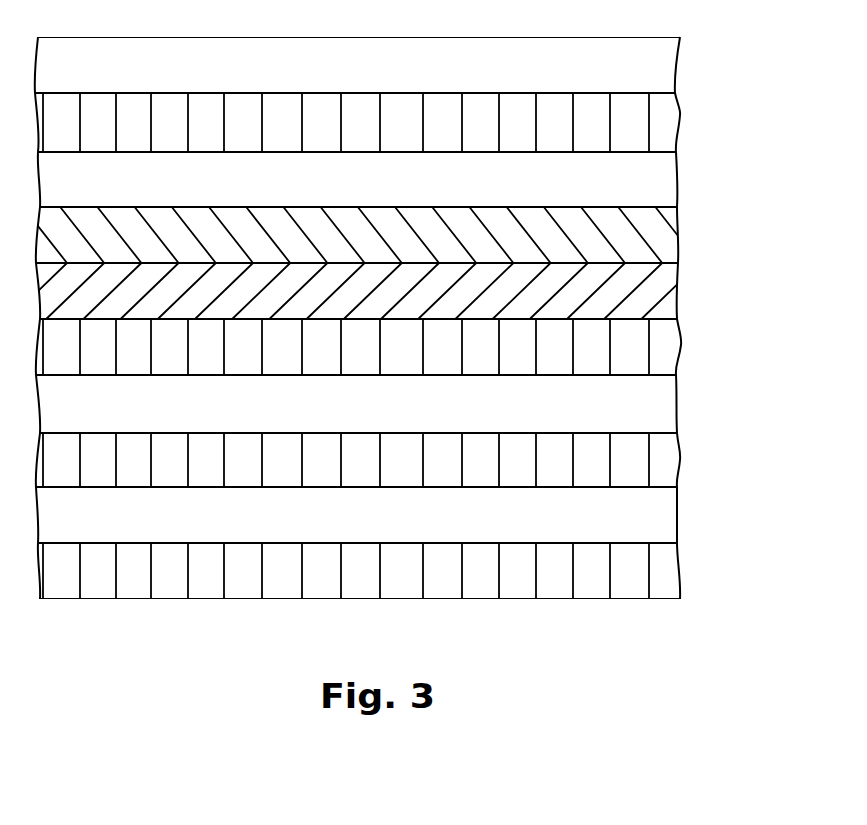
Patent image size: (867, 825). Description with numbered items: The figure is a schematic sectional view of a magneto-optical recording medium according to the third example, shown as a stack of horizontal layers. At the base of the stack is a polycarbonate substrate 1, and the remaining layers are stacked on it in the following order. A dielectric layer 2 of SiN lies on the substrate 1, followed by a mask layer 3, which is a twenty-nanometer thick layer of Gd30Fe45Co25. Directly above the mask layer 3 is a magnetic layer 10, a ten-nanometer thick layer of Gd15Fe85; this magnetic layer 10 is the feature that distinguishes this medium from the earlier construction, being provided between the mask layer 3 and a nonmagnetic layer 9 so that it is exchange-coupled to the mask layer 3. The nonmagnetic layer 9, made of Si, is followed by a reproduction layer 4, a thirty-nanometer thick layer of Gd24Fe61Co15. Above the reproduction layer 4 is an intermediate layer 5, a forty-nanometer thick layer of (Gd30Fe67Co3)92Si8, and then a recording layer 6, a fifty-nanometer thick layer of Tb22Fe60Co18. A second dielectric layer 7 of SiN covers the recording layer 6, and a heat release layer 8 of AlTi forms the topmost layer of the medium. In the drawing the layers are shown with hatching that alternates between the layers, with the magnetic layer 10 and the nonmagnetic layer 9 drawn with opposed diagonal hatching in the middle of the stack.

The polycarbonate substrate 1 is at (670, 63).
The dielectric layer 2 is at (667, 118).
The mask layer 3 is at (668, 180).
The reproduction layer 4 is at (673, 350).
The intermediate layer 5 is at (670, 405).
The recording layer 6 is at (673, 455).
The dielectric layer 7 is at (673, 520).
The heat release layer 8 is at (670, 573).
The nonmagnetic layer 9 is at (667, 290).
The magnetic layer 10 is at (668, 233).